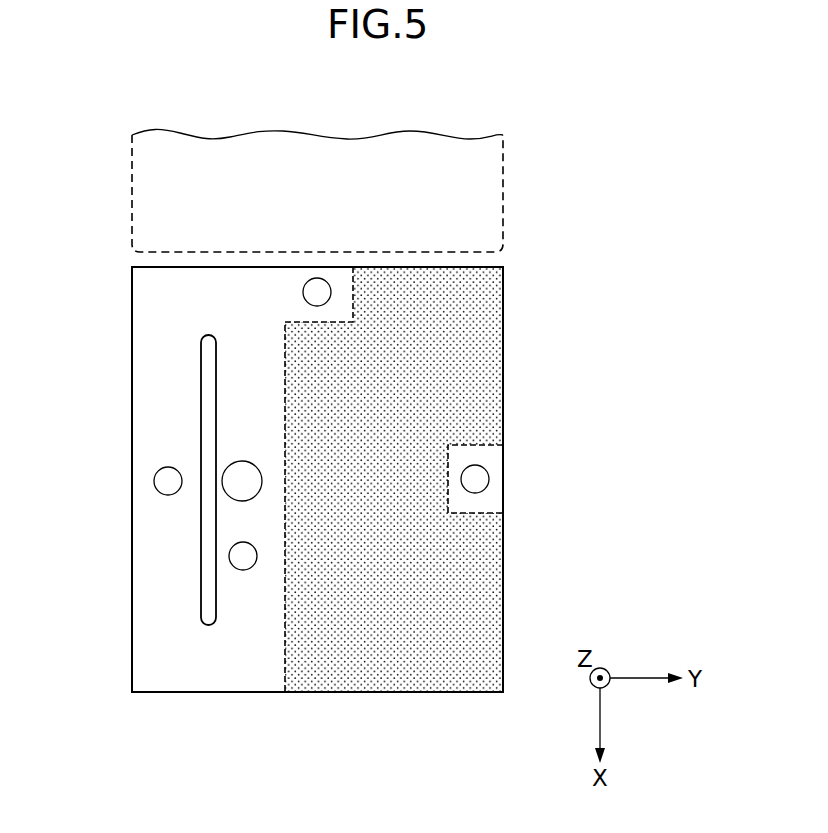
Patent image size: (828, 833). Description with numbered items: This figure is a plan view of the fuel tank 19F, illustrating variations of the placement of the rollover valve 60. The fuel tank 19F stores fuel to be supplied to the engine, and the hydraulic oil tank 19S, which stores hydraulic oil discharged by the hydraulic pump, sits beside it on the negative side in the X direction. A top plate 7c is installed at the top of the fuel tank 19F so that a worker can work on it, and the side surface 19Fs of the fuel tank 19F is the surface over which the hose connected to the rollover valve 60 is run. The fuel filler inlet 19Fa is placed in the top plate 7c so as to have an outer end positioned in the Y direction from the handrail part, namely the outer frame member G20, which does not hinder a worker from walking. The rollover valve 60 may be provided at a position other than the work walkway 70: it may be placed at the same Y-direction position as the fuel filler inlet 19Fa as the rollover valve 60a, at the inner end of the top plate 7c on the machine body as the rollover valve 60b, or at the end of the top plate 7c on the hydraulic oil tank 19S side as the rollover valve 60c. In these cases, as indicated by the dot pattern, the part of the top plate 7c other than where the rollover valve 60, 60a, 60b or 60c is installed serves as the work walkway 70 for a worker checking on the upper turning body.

The hydraulic oil tank 19S is at (504, 195).
The fuel tank 19F is at (504, 376).
The work walkway 70 is at (391, 692).
The rollover valve 60c is at (303, 292).
The top plate 7c is at (147, 362).
The fuel filler inlet 19Fa is at (240, 461).
The rollover valve 60 is at (154, 481).
The rollover valve 60b is at (489, 479).
The outer frame member G20 is at (210, 550).
The rollover valve 60a is at (243, 570).
The side surface 19Fs is at (132, 628).